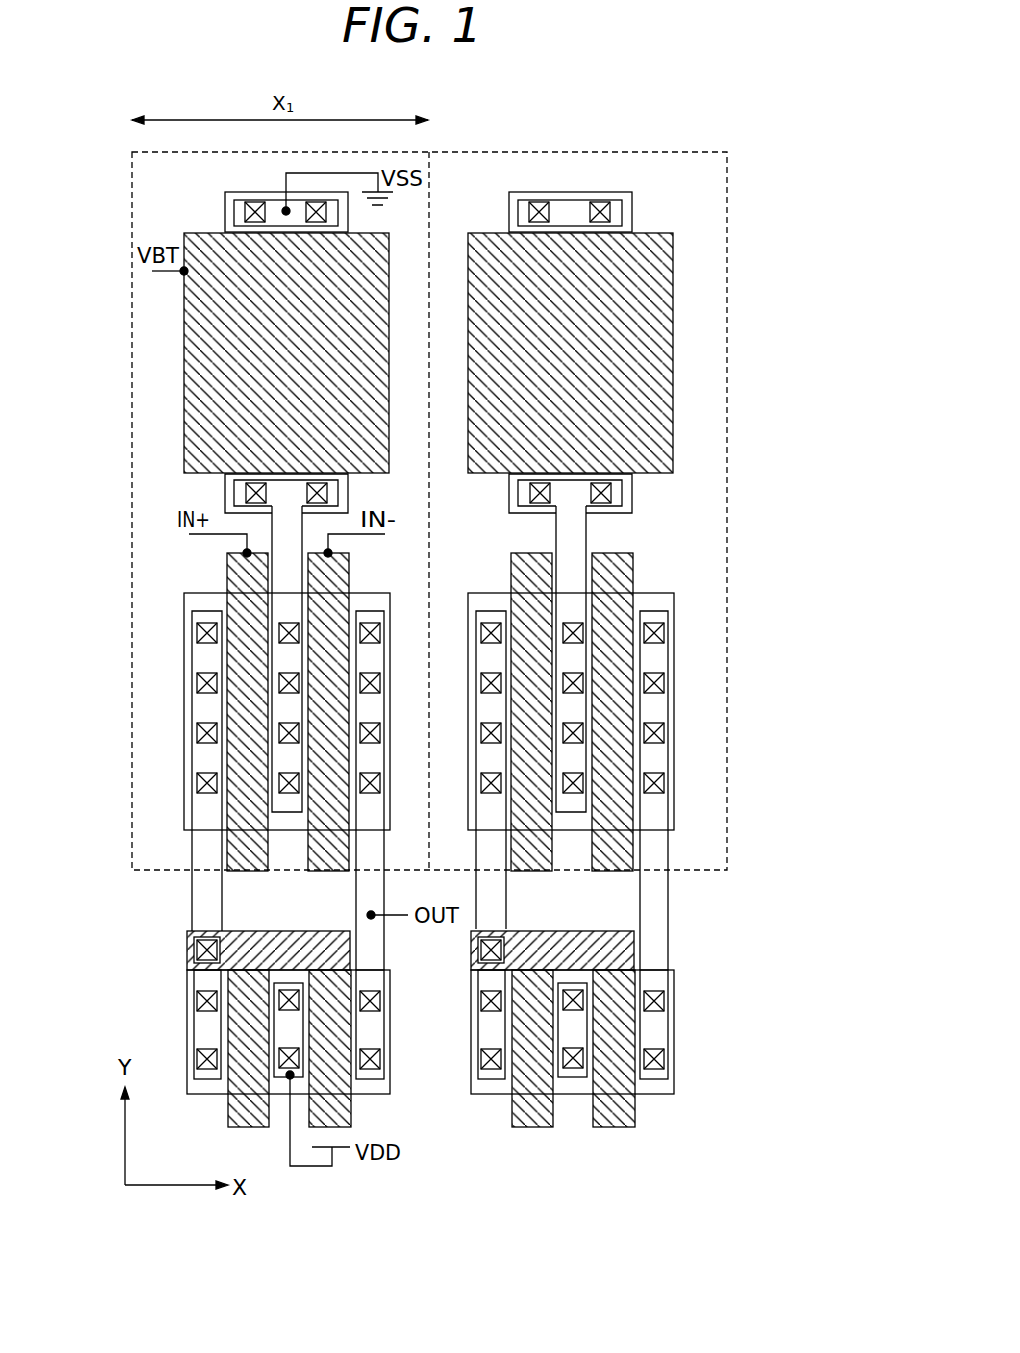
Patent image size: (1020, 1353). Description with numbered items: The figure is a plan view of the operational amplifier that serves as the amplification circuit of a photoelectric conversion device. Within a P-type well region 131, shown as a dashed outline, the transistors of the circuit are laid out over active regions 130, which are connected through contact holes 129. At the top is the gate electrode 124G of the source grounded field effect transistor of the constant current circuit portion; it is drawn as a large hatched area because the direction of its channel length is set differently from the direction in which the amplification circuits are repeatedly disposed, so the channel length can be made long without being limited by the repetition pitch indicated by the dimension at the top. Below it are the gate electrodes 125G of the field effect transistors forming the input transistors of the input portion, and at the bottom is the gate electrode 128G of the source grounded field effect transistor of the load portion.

The gate electrode of the source grounded field effect transistor 124G is at (193, 413).
The gate electrode of the field effect transistor 125G is at (318, 574).
The gate electrode of the source grounded field effect transistor 128G is at (256, 938).
The contact hole 129 is at (599, 205).
The active region 130 is at (633, 495).
The P-type well region 131 is at (727, 652).